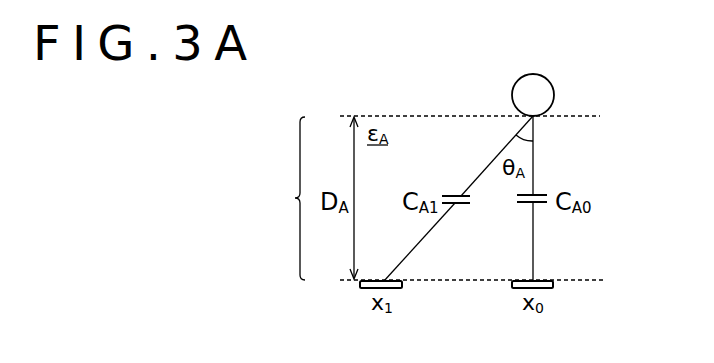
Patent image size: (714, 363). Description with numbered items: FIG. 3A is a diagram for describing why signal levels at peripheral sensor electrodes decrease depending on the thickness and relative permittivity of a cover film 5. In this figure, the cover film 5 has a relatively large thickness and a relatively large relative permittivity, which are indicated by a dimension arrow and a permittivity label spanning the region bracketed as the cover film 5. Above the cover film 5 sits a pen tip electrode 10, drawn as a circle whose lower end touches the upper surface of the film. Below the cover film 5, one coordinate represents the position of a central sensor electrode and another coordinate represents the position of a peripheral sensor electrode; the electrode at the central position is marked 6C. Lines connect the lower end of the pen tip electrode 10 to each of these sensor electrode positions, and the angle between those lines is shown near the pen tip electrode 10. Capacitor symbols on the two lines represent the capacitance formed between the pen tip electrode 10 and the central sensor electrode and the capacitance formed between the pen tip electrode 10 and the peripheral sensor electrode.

The pen tip electrode 10 is at (513, 93).
The cover film 5 is at (287, 198).
The detection electrode 6C is at (555, 287).